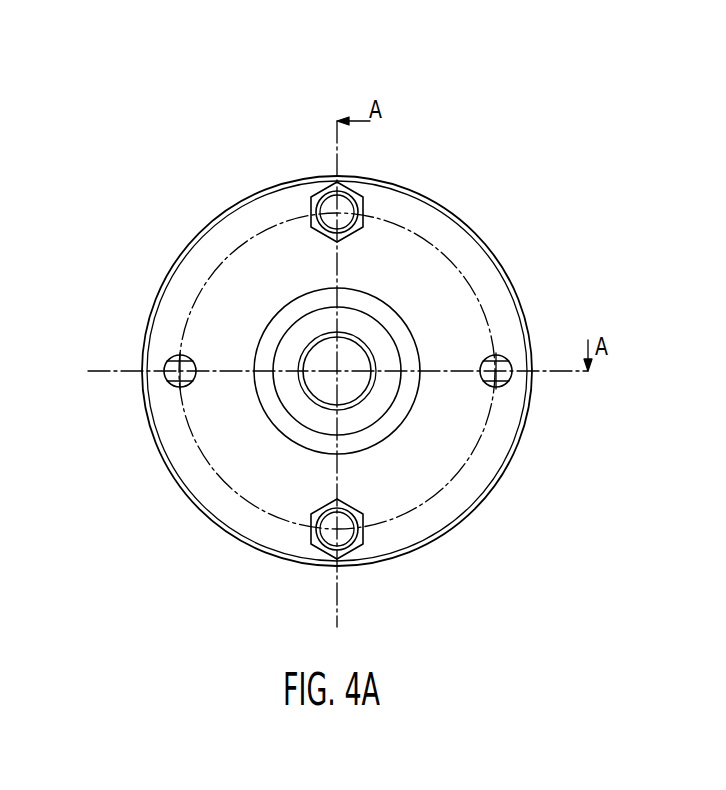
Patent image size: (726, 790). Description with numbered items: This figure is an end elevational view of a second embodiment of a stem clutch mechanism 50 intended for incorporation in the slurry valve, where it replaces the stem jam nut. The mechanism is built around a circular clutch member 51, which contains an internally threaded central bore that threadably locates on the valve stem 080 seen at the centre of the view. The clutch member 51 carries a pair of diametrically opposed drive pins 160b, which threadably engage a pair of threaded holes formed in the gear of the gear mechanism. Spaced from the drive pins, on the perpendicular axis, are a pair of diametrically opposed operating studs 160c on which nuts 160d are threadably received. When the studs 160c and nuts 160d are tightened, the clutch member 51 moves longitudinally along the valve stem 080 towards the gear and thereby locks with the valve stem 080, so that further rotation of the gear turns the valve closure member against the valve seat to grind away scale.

The stem clutch mechanism 50 is at (246, 138).
The clutch member 51 is at (253, 463).
The valve stem 080 is at (345, 380).
The drive pins 160b is at (178, 356).
The operating studs 160c is at (353, 208).
The nuts 160d is at (353, 190).